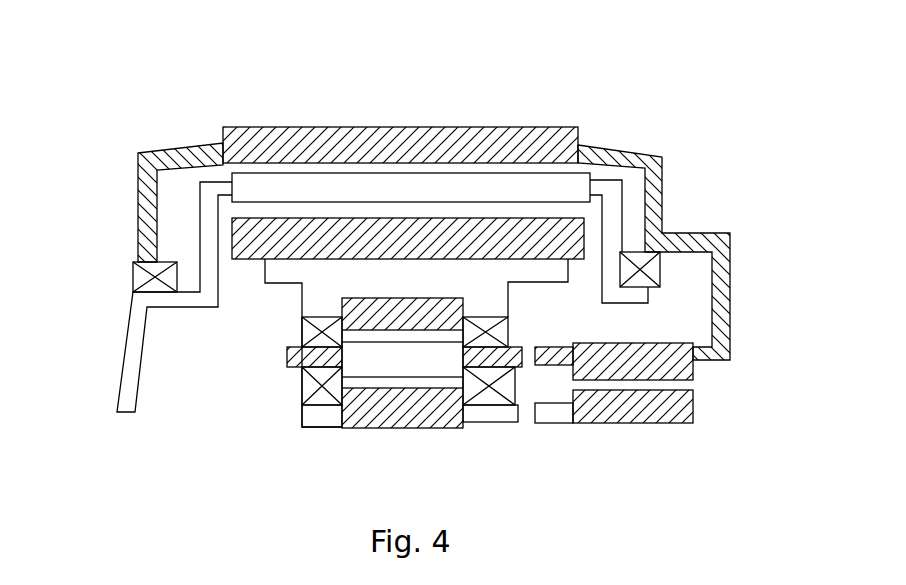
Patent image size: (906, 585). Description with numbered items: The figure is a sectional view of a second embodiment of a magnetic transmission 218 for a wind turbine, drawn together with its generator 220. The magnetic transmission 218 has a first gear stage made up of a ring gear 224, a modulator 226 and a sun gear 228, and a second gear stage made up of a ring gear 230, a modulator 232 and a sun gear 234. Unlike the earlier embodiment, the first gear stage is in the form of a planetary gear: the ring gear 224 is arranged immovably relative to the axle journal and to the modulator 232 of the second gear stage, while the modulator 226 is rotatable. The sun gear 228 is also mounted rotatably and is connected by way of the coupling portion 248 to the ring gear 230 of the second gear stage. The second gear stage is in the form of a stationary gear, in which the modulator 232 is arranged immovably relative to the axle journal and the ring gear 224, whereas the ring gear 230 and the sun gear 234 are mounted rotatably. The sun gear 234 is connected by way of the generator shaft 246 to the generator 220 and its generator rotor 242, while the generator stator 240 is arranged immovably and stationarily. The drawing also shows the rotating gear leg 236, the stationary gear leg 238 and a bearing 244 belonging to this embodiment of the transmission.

The magnetic transmission 218 is at (692, 181).
The generator 220 is at (618, 433).
The ring gear of the first gear stage 224 is at (247, 150).
The modulator of the first gear stage 226 is at (298, 187).
The sun gear of the first gear stage 228 is at (353, 223).
The ring gear of the second gear stage 230 is at (430, 300).
The modulator of the second gear stage 232 is at (370, 365).
The sun gear of the second gear stage 234 is at (418, 430).
The gear leg rotating 236 is at (130, 345).
The gear leg stationary 238 is at (620, 148).
The generator stator 240 is at (692, 375).
The generator rotor 242 is at (693, 410).
The bearing 244 is at (138, 257).
The generator shaft 246 is at (525, 433).
The coupling portion 248 is at (397, 273).